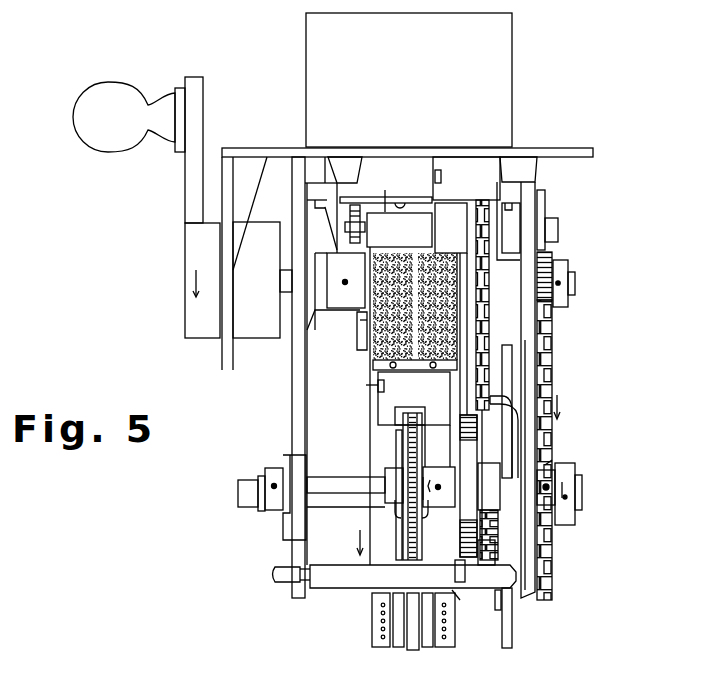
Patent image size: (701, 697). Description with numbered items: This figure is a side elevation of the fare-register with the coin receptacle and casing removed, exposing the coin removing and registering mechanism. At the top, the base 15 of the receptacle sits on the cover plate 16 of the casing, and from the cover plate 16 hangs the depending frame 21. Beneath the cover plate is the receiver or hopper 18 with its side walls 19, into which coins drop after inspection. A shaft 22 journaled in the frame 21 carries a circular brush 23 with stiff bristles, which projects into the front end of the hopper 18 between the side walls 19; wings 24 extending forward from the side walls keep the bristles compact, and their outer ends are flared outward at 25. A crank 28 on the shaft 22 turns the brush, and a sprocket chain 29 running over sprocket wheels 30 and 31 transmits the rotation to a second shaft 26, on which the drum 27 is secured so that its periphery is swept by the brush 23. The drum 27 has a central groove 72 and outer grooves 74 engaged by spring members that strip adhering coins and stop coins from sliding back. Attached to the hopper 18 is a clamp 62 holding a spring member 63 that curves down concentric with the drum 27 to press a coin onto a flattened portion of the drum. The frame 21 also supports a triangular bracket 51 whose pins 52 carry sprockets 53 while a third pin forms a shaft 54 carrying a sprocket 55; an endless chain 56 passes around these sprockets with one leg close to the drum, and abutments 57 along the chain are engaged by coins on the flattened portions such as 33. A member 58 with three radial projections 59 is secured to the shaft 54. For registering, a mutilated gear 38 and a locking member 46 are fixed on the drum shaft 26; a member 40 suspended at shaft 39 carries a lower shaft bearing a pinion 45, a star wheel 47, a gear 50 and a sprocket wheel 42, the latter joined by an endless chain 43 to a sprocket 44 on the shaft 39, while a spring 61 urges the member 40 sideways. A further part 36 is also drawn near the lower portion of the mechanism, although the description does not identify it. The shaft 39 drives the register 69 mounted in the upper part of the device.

The base 15 is at (409, 80).
The cover plate 16 is at (282, 150).
The crank 28 is at (188, 183).
The shaft 22 is at (283, 282).
The depending frame 21 is at (294, 388).
The receiver or hopper 18 is at (421, 200).
The side walls 19 is at (332, 249).
The circular brush 23 is at (400, 232).
The register 69 is at (399, 218).
The wings 24 is at (401, 357).
The clamp 62 is at (372, 384).
The flared ends 25 is at (358, 342).
The member 40 is at (470, 246).
The endless chain 43 is at (485, 330).
The sprocket 44 is at (476, 228).
The shaft 39 is at (548, 222).
The sprocket wheel 30 is at (548, 262).
The sprocket chain 29 is at (550, 433).
The sprocket wheel 31 is at (548, 466).
The shaft 54 is at (333, 486).
The shaft 26 is at (338, 502).
The drum 27 is at (366, 478).
The sprockets 53 is at (400, 415).
The triangular bracket 51 is at (406, 457).
The pins 52 is at (397, 434).
The sprocket 55 is at (410, 492).
The abutments 57 is at (418, 475).
The spring member 63 is at (443, 491).
The endless chain 56 is at (410, 522).
The radial projections 59 is at (469, 486).
The pinion 45 is at (505, 478).
The sprocket wheel 42 is at (488, 525).
The gear 50 is at (486, 553).
The star wheel 47 is at (500, 528).
The member 58 is at (395, 576).
The flattened portions 33 is at (374, 620).
The outer grooves 74 is at (398, 647).
The central groove 72 is at (413, 650).
The bracket 36 is at (448, 622).
The spring 61 is at (463, 601).
The locking member 46 is at (496, 604).
The mutilated gear 38 is at (512, 628).